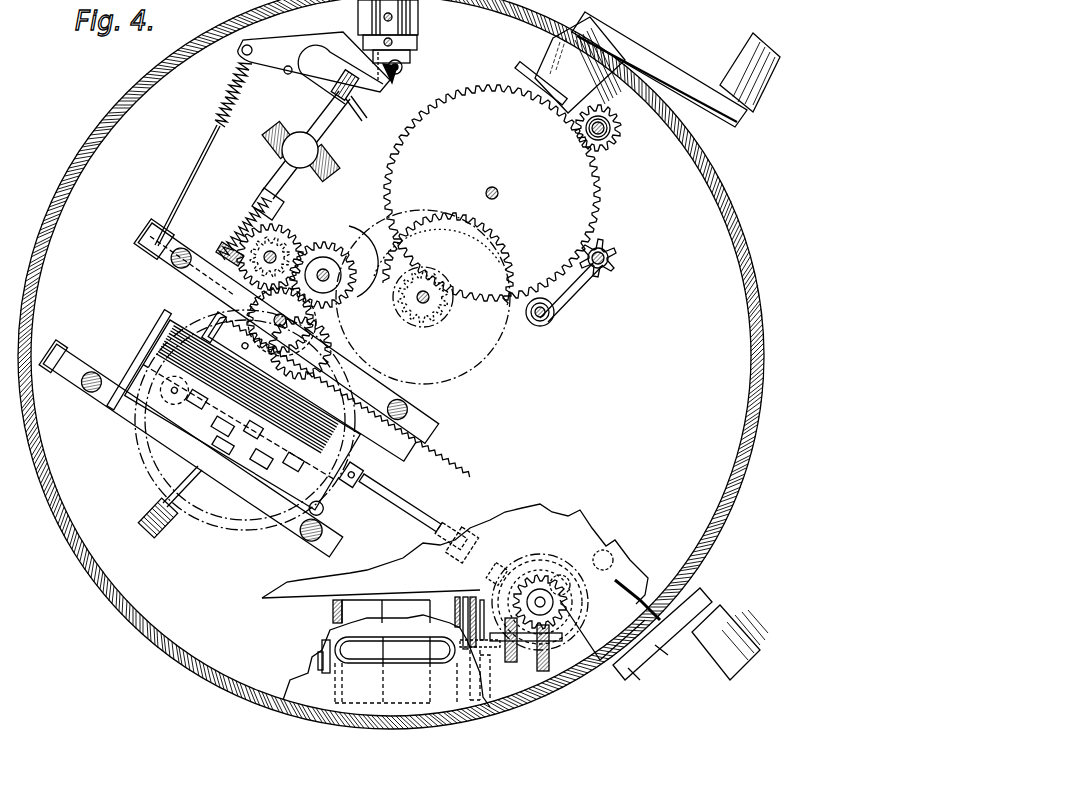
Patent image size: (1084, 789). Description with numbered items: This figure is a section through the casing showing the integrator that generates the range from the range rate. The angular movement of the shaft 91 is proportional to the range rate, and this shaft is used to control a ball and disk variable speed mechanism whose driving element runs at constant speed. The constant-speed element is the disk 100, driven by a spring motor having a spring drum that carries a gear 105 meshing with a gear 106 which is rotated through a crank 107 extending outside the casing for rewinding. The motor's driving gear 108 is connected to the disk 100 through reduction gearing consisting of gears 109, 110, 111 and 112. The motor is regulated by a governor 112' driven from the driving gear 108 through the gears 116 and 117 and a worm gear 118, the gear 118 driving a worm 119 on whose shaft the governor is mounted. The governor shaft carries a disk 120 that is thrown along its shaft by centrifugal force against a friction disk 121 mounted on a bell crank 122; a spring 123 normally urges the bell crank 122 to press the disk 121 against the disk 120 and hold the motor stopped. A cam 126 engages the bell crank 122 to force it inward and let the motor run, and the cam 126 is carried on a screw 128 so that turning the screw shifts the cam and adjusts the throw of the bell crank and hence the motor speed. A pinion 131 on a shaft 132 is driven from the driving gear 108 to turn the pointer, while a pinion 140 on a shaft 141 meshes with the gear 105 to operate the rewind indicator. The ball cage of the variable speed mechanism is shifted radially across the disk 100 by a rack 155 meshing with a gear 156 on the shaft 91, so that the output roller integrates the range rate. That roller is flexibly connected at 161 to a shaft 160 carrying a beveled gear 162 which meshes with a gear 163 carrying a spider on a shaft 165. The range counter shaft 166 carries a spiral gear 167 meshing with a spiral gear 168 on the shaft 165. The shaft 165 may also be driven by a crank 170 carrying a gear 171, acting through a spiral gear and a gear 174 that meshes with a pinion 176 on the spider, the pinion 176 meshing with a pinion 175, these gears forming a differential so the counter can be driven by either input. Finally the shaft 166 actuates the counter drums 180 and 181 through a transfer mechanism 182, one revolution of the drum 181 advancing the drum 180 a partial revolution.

The shaft 91 is at (312, 320).
The disk 100 is at (172, 475).
The gear 105 is at (492, 88).
The gear 106 is at (548, 60).
The crank 107 is at (680, 64).
The driving gear 108 is at (492, 193).
The gear 109 is at (440, 312).
The gear 110 is at (433, 224).
The gear 111 is at (326, 262).
The gear 112 is at (408, 297).
The governor 112' is at (297, 155).
The gear 116 is at (358, 244).
The gear 117 is at (278, 240).
The worm gear 118 is at (285, 248).
The worm 119 is at (238, 245).
The disk 120 is at (335, 85).
The friction disk 121 is at (352, 122).
The bell crank 122 is at (283, 45).
The spring 123 is at (218, 96).
The cam 126 is at (403, 66).
The screw 128 is at (398, 78).
The pinion 131 is at (612, 128).
The shaft 132 is at (598, 115).
The pinion 140 is at (614, 250).
The shaft 141 is at (604, 275).
The rack 155 is at (400, 380).
The gear 156 is at (328, 346).
The shaft 160 is at (430, 520).
The flexible connection 161 is at (366, 472).
The beveled gear 162 is at (490, 552).
The gear 163 is at (622, 672).
The shaft 165 is at (535, 585).
The shaft of the range counter 166 is at (528, 655).
The spiral gear 167 is at (580, 678).
The spiral gear 168 is at (565, 578).
The crank 170 is at (738, 628).
The gear 171 is at (608, 560).
The gear 174 is at (548, 575).
The pinion 175 is at (500, 561).
The pinion 176 is at (478, 640).
The counter drum 180 is at (358, 607).
The counter drum 181 is at (402, 604).
The transfer mechanism 182 is at (468, 600).